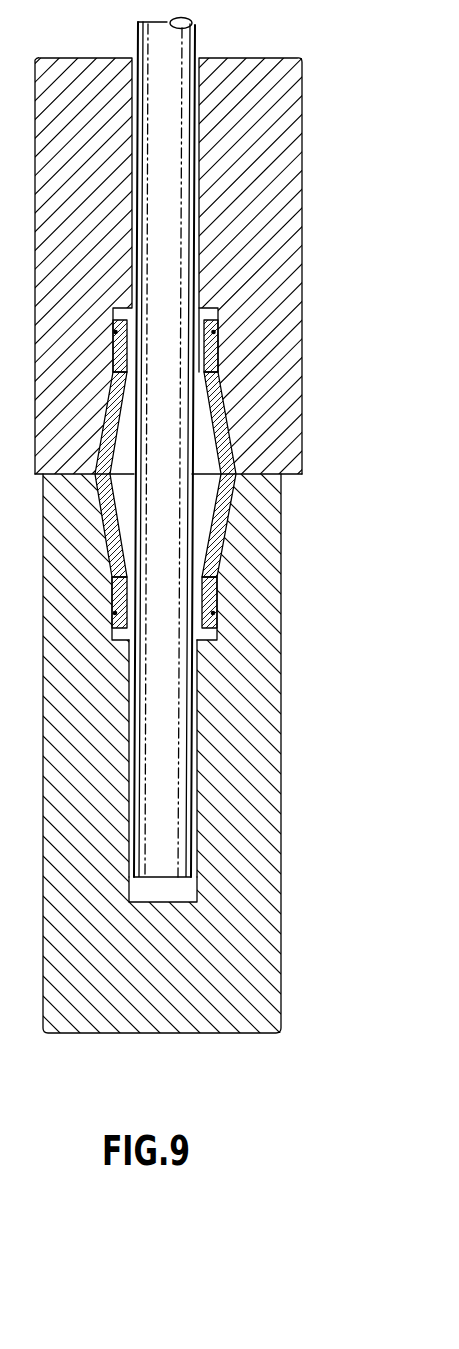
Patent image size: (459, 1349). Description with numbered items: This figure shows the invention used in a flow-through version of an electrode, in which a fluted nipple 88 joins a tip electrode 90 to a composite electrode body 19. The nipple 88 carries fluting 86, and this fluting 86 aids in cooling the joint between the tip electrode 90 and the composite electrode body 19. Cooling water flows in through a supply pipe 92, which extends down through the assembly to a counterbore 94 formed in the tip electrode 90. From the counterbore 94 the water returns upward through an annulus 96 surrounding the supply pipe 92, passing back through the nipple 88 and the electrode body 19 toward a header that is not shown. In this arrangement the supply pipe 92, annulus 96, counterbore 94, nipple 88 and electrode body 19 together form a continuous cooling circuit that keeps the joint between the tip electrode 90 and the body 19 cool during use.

The composite electrode body 19 is at (295, 133).
The fluting 86 is at (208, 494).
The nipple 88 is at (223, 427).
The tip electrode 90 is at (275, 615).
The supply pipe 92 is at (145, 38).
The counterbore 94 is at (183, 887).
The annulus 96 is at (197, 733).